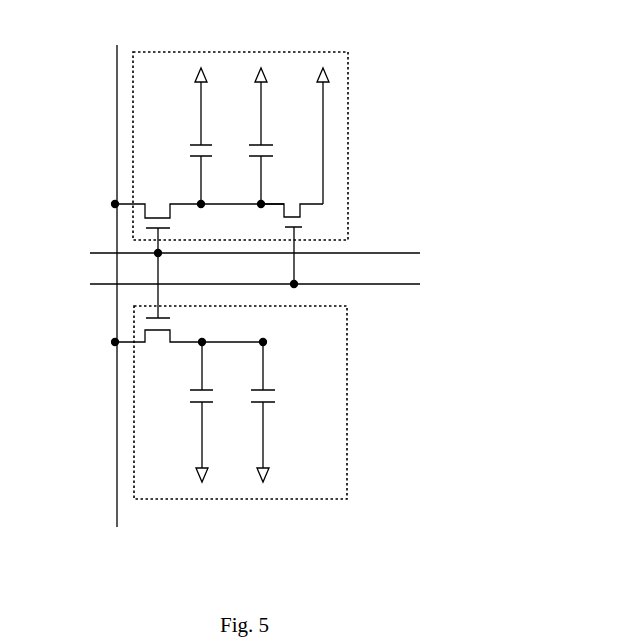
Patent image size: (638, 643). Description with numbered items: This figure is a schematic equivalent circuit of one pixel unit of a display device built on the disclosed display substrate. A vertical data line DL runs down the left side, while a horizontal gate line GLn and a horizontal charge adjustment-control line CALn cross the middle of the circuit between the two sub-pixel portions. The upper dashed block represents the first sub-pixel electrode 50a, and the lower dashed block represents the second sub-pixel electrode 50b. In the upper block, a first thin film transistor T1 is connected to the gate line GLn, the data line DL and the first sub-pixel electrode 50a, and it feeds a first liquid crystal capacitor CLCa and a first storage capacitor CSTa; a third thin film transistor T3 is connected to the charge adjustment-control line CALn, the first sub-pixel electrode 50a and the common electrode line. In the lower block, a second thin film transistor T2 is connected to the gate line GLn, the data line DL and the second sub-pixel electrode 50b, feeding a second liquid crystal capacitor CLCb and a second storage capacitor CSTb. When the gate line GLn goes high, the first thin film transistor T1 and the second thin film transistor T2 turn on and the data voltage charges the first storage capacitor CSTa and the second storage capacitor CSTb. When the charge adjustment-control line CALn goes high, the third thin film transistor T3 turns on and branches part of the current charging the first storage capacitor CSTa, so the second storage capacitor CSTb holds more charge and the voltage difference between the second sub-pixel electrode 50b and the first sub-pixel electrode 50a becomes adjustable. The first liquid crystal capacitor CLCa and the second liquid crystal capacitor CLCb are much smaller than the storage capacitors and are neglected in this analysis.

The first sub-pixel electrode 50a is at (268, 165).
The second sub-pixel electrode 50b is at (279, 376).
The data line DL is at (102, 276).
The gate line GLn is at (236, 253).
The charge adjustment-control line CALn is at (231, 284).
The first thin film transistor T1 is at (160, 228).
The second thin film transistor T2 is at (160, 297).
The third thin film transistor T3 is at (296, 244).
The first liquid crystal capacitor CLCa is at (179, 163).
The first storage capacitor CSTa is at (278, 163).
The second liquid crystal capacitor CLCb is at (179, 412).
The second storage capacitor CSTb is at (281, 412).